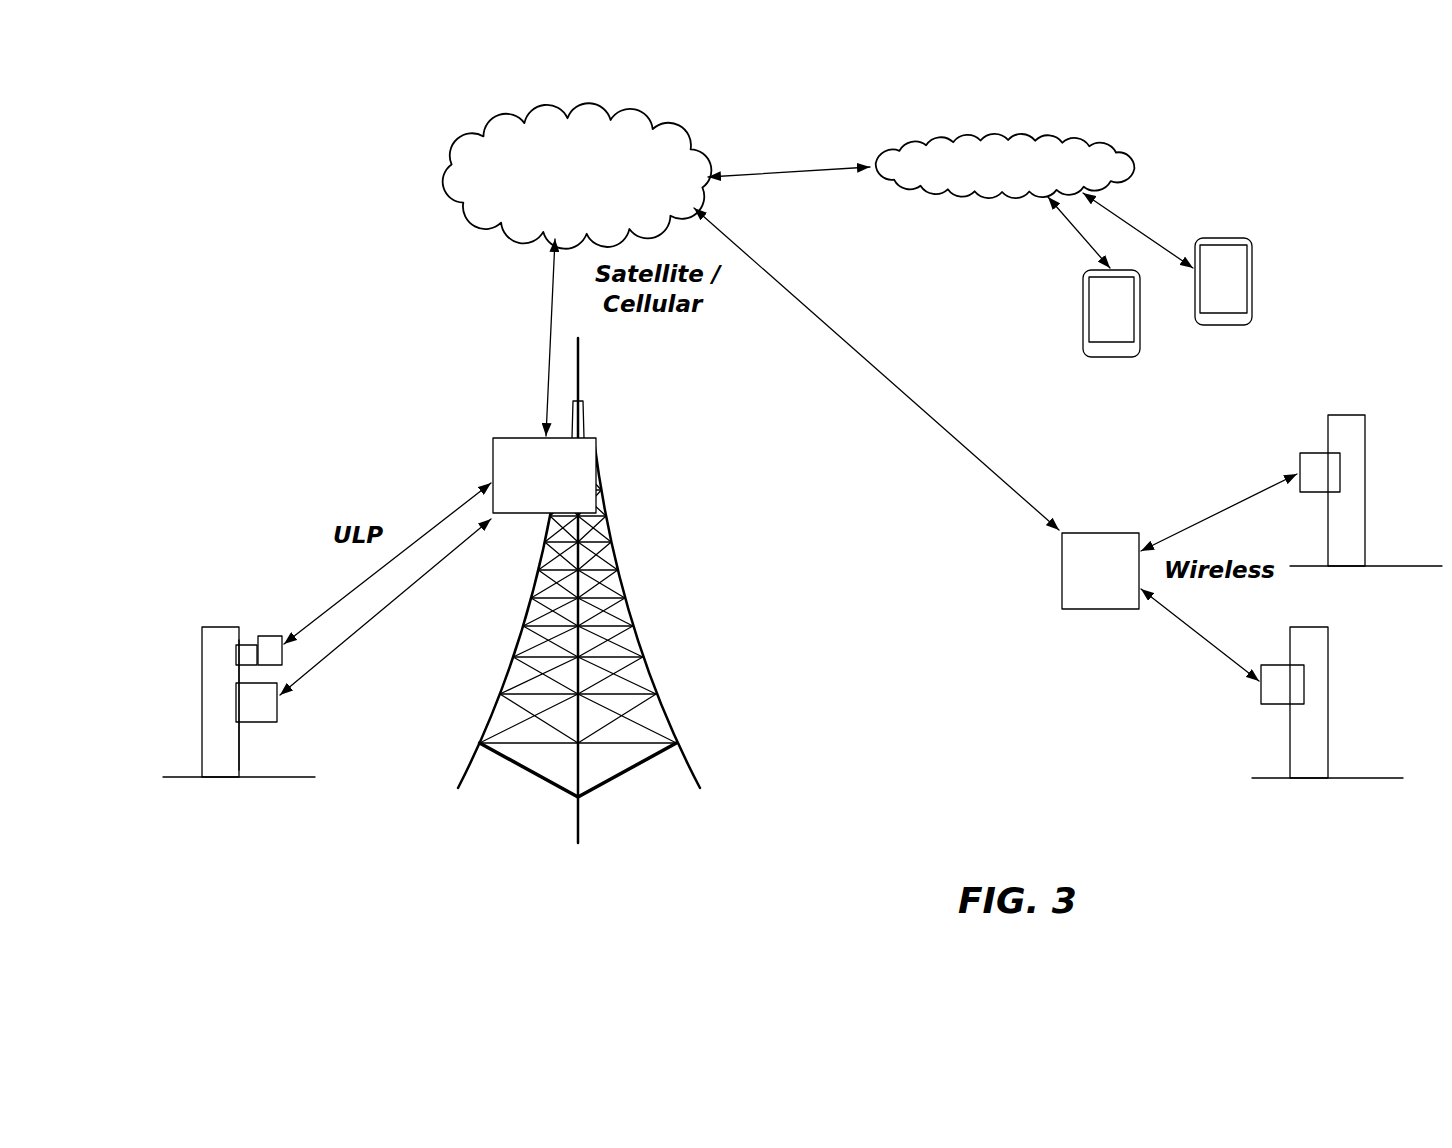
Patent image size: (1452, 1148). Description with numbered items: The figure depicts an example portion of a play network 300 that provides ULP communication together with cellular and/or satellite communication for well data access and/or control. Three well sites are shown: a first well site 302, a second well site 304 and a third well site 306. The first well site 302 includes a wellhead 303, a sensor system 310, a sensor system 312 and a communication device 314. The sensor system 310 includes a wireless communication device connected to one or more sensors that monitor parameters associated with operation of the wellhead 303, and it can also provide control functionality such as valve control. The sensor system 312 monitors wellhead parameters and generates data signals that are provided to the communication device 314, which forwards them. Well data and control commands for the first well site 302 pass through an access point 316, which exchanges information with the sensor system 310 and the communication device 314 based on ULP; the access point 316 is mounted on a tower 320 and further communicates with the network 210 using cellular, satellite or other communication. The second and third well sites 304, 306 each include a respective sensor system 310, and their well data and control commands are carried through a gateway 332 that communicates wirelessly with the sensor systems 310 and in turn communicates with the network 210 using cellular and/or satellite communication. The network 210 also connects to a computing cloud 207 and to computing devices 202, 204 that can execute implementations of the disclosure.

The play network 300 is at (219, 264).
The network 210 is at (682, 143).
The computing cloud 207 is at (1137, 168).
The computing device 202 is at (1253, 280).
The computing device 204 is at (1082, 311).
The access point 316 is at (597, 452).
The tower 320 is at (641, 640).
The first well site 302 is at (188, 604).
The wellhead 303 is at (239, 748).
The sensor system 312 is at (245, 644).
The communication device 314 is at (272, 635).
The sensor system 310 is at (278, 710).
The gateway 332 is at (1062, 592).
The second well site 304 is at (1386, 416).
The third well site 306 is at (1358, 645).